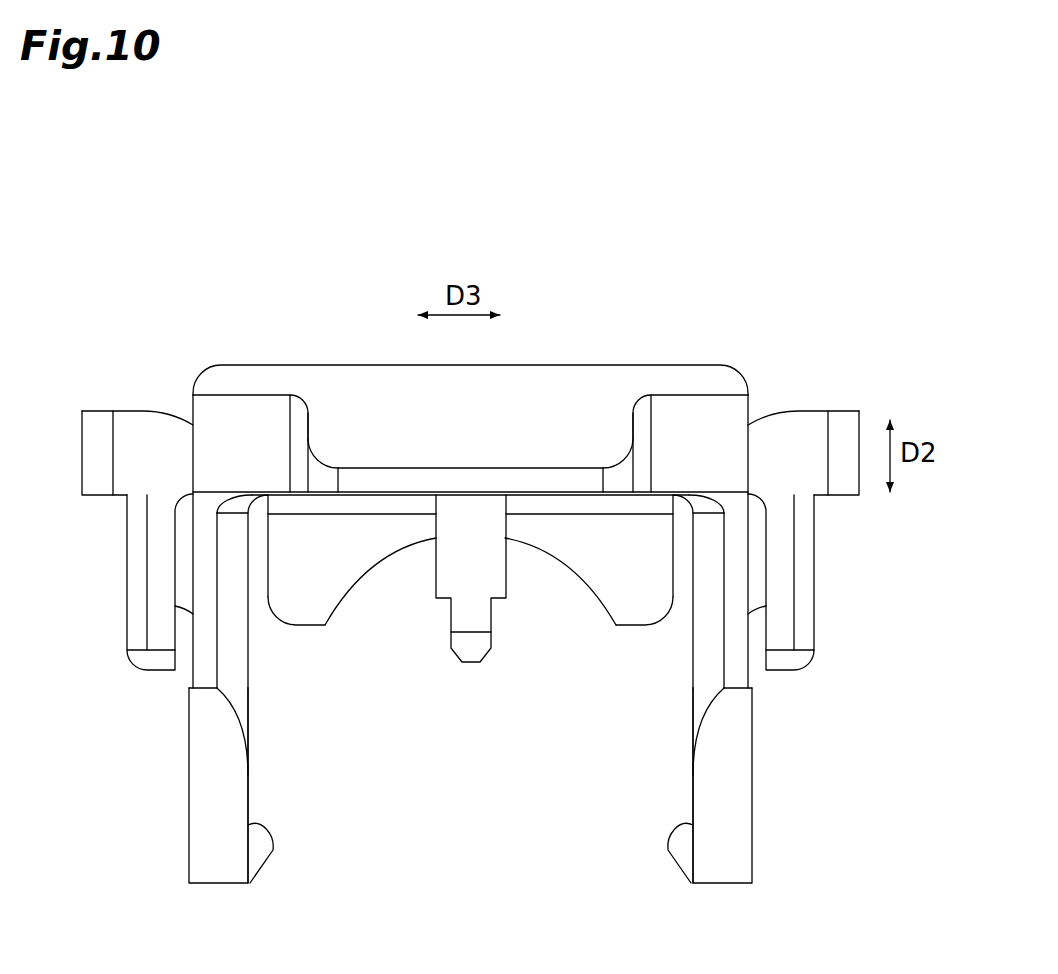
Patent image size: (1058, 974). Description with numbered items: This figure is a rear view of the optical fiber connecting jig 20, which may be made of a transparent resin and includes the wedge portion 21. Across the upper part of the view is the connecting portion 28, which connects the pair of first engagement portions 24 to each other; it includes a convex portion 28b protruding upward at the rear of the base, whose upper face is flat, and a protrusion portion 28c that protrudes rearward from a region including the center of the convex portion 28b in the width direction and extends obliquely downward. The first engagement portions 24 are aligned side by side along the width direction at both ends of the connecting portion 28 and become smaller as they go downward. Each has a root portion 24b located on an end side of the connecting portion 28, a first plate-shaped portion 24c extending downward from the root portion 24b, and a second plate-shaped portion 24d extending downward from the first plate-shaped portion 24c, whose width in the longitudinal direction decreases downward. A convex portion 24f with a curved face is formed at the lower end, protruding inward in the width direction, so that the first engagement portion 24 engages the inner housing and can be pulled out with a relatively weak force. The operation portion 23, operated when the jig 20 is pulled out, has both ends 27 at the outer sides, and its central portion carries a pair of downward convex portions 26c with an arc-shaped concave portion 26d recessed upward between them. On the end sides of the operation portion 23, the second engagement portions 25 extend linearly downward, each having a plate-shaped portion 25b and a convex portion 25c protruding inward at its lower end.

The optical fiber connecting jig 20 is at (740, 248).
The wedge portion 21 is at (472, 634).
The operation portion 23 is at (814, 404).
The first engagement portion 24 is at (183, 795).
The root portion 24b is at (247, 450).
The first plate-shaped portion 24c is at (238, 663).
The second plate-shaped portion 24d is at (207, 857).
The convex portion 24f is at (258, 852).
The second engagement portion 25 is at (122, 613).
The plate-shaped portion 25b is at (147, 567).
The convex portion 25c is at (177, 633).
The convex portion 26c is at (309, 608).
The concave portion 26d is at (436, 546).
The both ends 27 is at (93, 450).
The connecting portion 28 is at (560, 384).
The convex portion 28b is at (673, 364).
The protrusion portion 28c is at (395, 477).